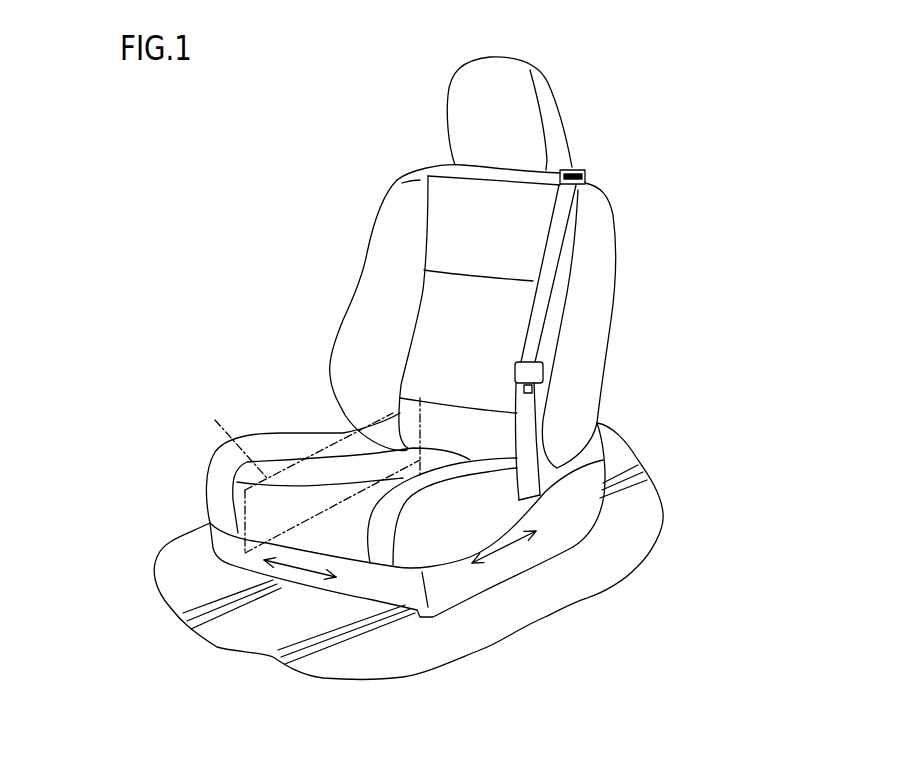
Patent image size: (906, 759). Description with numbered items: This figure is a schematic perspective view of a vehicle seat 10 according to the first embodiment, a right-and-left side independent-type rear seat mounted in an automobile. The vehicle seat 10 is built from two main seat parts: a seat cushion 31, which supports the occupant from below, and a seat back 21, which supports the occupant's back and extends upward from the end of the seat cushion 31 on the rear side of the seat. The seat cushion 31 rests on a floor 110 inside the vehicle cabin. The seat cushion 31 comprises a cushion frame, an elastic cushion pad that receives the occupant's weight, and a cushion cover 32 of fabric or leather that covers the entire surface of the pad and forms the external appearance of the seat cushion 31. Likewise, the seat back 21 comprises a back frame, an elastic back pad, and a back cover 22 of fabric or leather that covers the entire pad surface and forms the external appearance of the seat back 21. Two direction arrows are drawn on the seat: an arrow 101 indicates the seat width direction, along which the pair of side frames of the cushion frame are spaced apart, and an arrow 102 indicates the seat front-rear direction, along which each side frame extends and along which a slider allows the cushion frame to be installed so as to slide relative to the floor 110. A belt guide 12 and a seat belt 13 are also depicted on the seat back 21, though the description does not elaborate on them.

The vehicle seat 10 is at (316, 122).
The belt guide 12 is at (584, 171).
The seat belt 13 is at (540, 325).
The seat back 21 is at (591, 246).
The back cover 22 is at (390, 222).
The seat cushion 31 is at (432, 534).
The cushion cover 32 is at (303, 447).
The arrow indicating seat width direction 101 is at (297, 568).
The arrow indicating seat front-rear direction 102 is at (503, 550).
The floor 110 is at (623, 543).